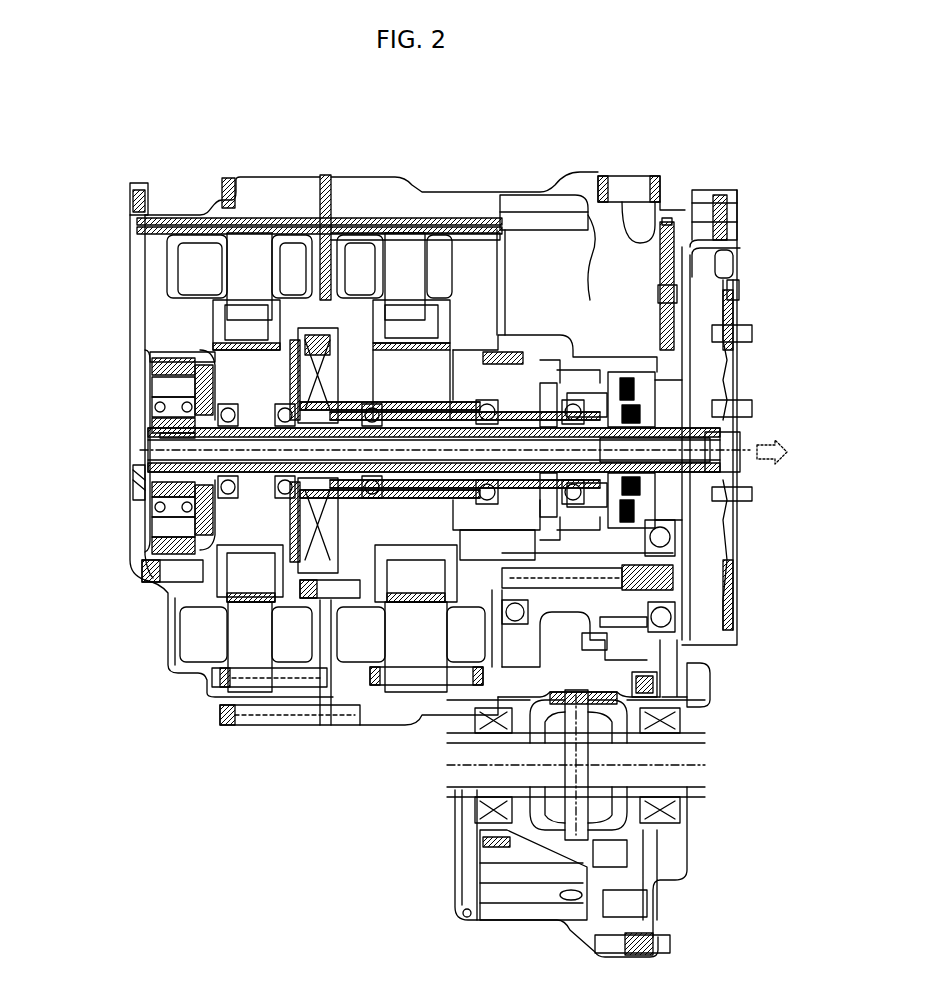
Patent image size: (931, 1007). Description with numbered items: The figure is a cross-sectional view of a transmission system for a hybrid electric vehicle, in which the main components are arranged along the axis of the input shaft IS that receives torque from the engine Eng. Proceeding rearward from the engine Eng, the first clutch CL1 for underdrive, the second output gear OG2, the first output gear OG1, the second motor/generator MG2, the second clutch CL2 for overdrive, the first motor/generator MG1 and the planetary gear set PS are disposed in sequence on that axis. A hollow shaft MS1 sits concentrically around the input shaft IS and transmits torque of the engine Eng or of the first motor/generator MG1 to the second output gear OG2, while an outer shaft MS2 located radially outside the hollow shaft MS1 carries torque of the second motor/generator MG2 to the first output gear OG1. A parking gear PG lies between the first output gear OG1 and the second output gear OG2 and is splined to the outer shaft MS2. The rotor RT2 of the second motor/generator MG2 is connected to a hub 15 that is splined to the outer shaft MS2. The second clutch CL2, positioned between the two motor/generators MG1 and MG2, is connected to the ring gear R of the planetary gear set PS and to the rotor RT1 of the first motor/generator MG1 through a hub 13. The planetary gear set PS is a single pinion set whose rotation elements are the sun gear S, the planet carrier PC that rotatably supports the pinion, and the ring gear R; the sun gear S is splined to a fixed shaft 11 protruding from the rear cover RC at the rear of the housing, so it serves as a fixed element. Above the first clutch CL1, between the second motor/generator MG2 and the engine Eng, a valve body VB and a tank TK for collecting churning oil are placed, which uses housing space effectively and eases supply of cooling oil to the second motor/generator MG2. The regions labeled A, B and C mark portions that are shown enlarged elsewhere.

The first motor/generator MG1 is at (218, 236).
The second motor/generator MG2 is at (373, 235).
The first clutch CL1 is at (647, 383).
The second clutch CL2 is at (293, 323).
The hub 15 is at (395, 300).
The rotor RT1 is at (232, 318).
The rotor RT2 is at (408, 340).
The hollow shaft MS1 is at (440, 355).
The outer shaft MS2 is at (470, 360).
The input shaft IS is at (505, 400).
The first output gear OG1 is at (490, 380).
The second output gear OG2 is at (585, 405).
The tank TK is at (552, 215).
The valve body VB is at (577, 250).
The parking gear PG is at (553, 390).
The planetary gear set PS is at (160, 353).
The hub 13 is at (150, 385).
The fixed shaft 11 is at (170, 430).
The rear cover RC is at (130, 467).
The B portion B is at (127, 483).
The sun gear S is at (127, 503).
The planet carrier PC is at (137, 515).
The ring gear R is at (143, 548).
The A portion A is at (695, 515).
The engine Eng is at (788, 452).
The C portion C is at (415, 598).